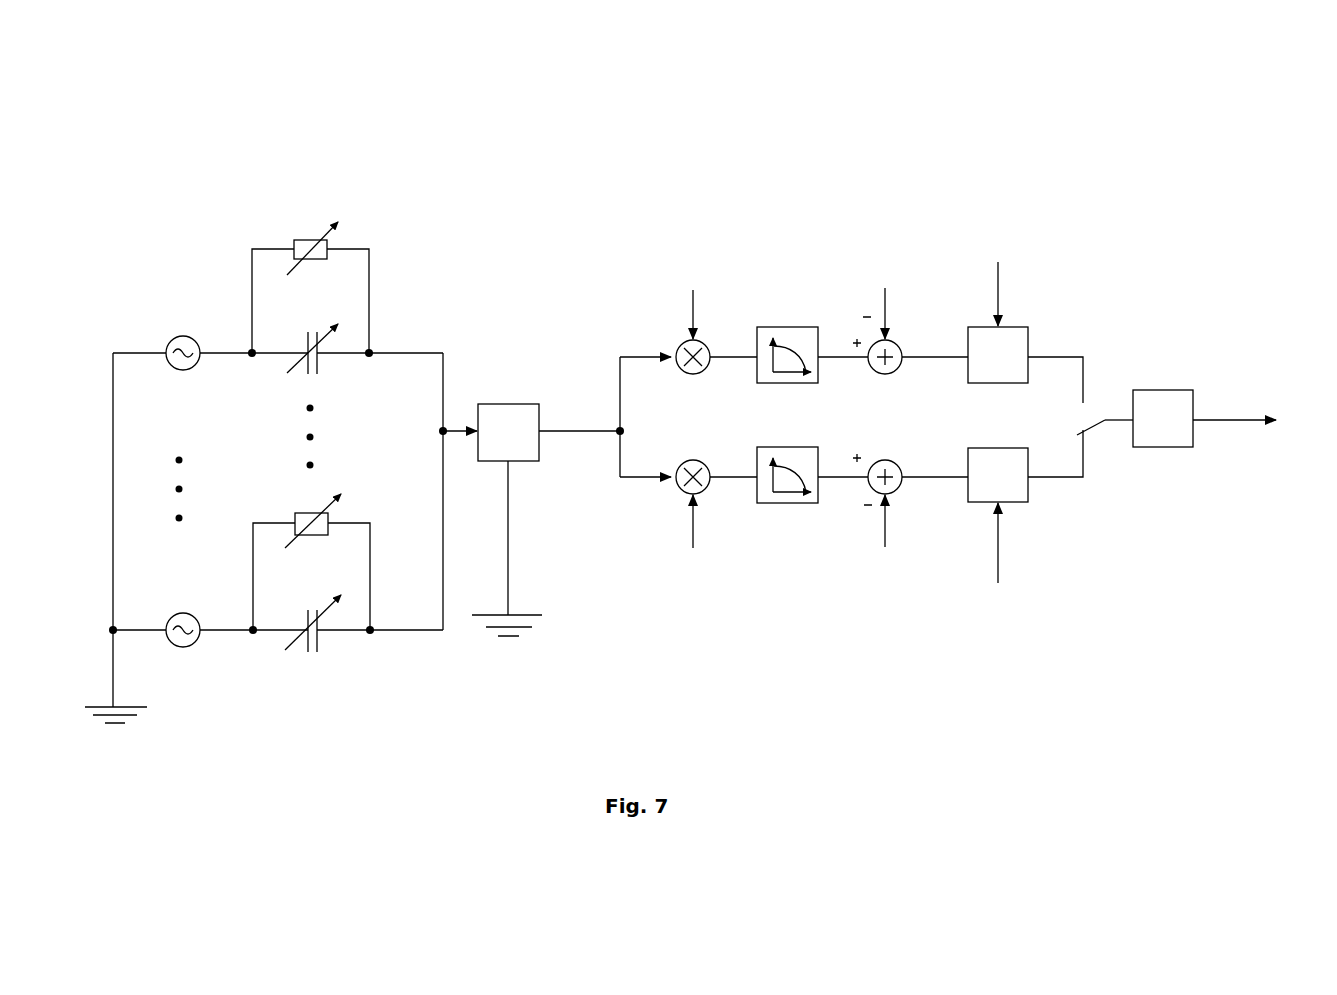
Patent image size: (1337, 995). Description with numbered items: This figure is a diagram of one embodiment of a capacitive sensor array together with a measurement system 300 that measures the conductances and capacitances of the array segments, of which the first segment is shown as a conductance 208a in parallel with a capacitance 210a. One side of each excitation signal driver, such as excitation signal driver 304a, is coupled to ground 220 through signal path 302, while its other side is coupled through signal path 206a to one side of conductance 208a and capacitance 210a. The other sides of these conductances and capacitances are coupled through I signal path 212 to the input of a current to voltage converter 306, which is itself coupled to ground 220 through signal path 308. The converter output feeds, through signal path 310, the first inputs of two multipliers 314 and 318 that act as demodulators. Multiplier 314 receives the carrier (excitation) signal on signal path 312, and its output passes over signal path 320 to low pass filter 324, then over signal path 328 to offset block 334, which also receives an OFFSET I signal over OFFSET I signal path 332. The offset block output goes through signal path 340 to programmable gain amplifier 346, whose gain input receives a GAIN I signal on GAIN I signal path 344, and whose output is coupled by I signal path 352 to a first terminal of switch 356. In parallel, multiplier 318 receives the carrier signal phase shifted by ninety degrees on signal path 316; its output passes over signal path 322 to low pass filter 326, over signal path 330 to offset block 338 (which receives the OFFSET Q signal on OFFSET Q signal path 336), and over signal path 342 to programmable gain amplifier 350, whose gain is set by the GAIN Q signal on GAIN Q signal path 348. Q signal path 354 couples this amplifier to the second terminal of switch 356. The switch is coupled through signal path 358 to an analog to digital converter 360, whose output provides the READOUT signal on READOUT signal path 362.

The measurement system 300 is at (893, 170).
The signal path 302 is at (113, 510).
The excitation signal driver 304a is at (178, 333).
The signal path 206a is at (217, 357).
The conductance G0 208a is at (306, 238).
The capacitance C0 210a is at (320, 367).
The I signal path 212 is at (419, 353).
The ground 220 is at (113, 727).
The current to voltage converter 306 is at (504, 402).
The signal path 308 is at (508, 548).
The signal path 310 is at (563, 428).
The signal path 312 is at (690, 302).
The multiplier 314 is at (682, 368).
The signal path 316 is at (690, 533).
The multiplier 318 is at (688, 463).
The signal path 320 is at (733, 355).
The signal path 322 is at (727, 482).
The low pass filter 324 is at (790, 327).
The low pass filter 326 is at (780, 507).
The signal path 328 is at (840, 358).
The signal path 330 is at (828, 475).
The OFFSET I signal path 332 is at (880, 302).
The offset block 334 is at (883, 377).
The OFFSET Q signal path 336 is at (880, 535).
The offset block 338 is at (893, 452).
The signal path 340 is at (932, 355).
The signal path 342 is at (918, 483).
The GAIN I signal path 344 is at (1000, 263).
The programmable gain amplifier 346 is at (1012, 327).
The GAIN Q signal path 348 is at (1000, 553).
The programmable gain amplifier 350 is at (1030, 495).
The I signal path 352 is at (1087, 362).
The Q signal path 354 is at (1085, 460).
The switch 356 is at (1095, 426).
The signal path 358 is at (1118, 418).
The analog to digital converter 360 is at (1157, 390).
The READOUT signal path 362 is at (1240, 422).